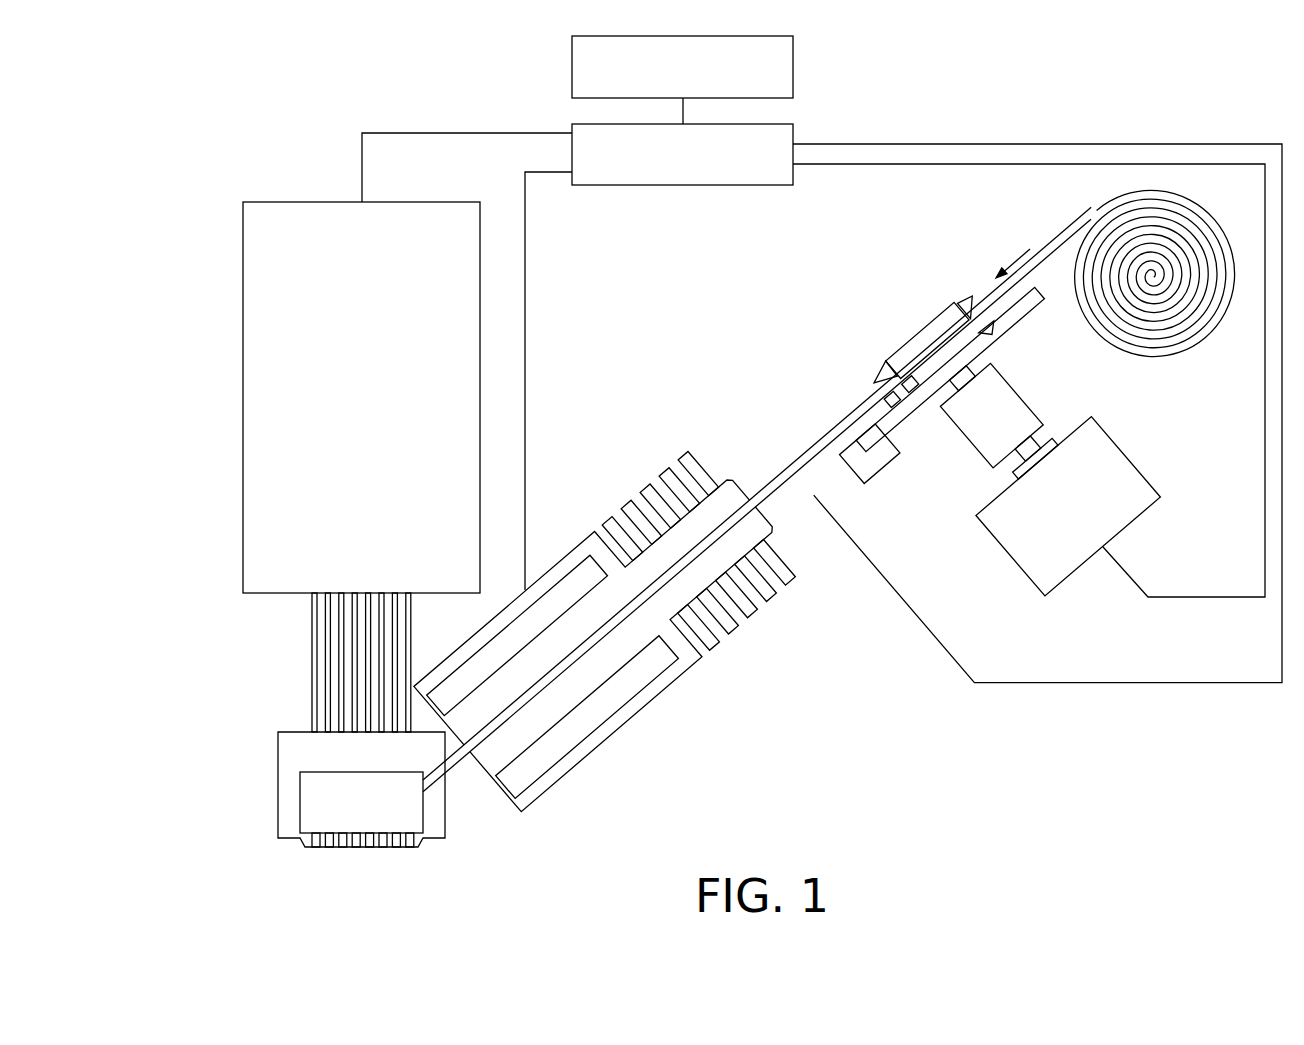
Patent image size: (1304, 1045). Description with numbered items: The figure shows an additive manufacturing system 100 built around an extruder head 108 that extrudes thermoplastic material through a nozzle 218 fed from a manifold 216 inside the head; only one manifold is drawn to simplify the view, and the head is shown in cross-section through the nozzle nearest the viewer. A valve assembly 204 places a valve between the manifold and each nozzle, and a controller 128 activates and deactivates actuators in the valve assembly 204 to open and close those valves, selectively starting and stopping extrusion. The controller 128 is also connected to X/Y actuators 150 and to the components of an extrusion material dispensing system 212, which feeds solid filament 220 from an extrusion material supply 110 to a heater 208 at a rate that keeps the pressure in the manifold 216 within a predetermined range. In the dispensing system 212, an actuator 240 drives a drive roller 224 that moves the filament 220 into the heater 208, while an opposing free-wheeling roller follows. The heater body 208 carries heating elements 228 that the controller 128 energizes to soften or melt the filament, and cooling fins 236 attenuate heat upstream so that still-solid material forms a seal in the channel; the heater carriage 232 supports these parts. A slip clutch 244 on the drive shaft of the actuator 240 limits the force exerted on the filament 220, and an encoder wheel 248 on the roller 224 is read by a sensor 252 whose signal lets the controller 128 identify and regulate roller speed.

The additive manufacturing system 100 is at (183, 127).
The extruder head 108 is at (278, 722).
The extrusion material supply 110 is at (1222, 247).
The controller 128 is at (683, 187).
The X/Y actuators 150 is at (795, 63).
The valve assembly 204 is at (308, 200).
The heater 208 is at (600, 750).
The extrusion material dispensing system 212 is at (978, 590).
The manifold 216 is at (423, 815).
The nozzle 218 is at (325, 852).
The extrusion material filament 220 is at (1050, 247).
The drive roller 224 is at (920, 328).
The heating elements 228 is at (563, 570).
The lower carriage body 232 is at (507, 727).
The cooling fins 236 is at (683, 452).
The actuator 240 is at (1130, 443).
The slip clutch 244 is at (1035, 408).
The encoder wheel 248 is at (908, 408).
The sensor 252 is at (866, 480).